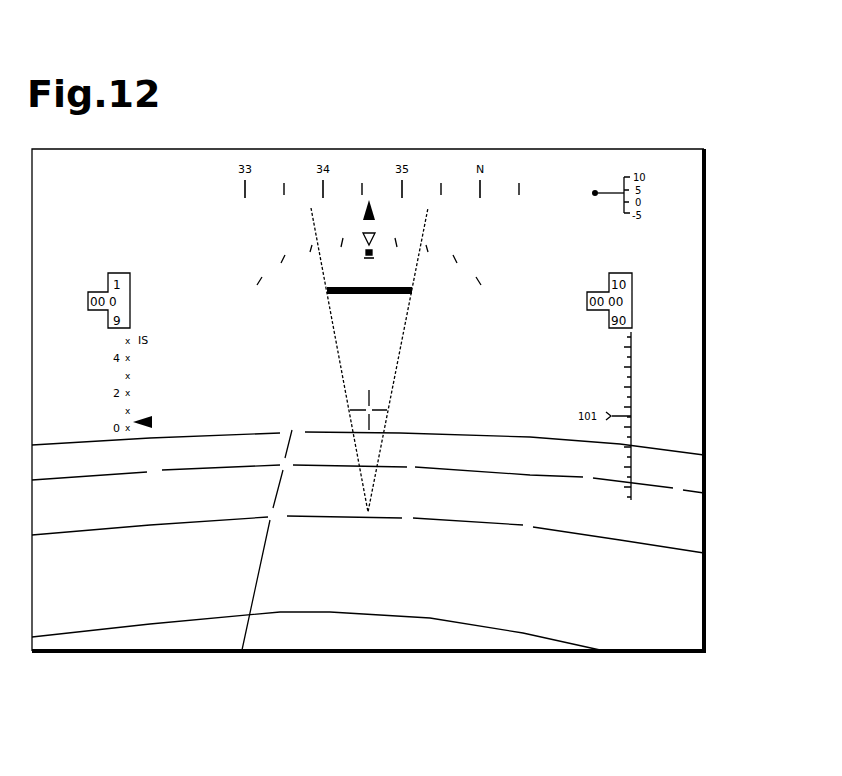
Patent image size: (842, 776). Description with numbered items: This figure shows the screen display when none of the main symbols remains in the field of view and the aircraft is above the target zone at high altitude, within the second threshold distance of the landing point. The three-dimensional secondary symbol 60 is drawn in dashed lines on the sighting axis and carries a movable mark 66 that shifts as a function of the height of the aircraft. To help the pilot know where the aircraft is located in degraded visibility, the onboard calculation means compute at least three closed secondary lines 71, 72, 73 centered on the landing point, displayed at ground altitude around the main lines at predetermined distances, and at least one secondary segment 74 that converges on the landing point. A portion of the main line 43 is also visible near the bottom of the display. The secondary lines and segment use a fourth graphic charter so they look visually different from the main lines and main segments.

The movable mark 66 is at (340, 287).
The three-dimensional secondary symbol 60 is at (412, 365).
The closed secondary line 71 is at (662, 447).
The closed secondary line 72 is at (690, 487).
The closed secondary line 73 is at (677, 547).
The secondary segment 74 is at (260, 577).
The main line 43 is at (528, 632).